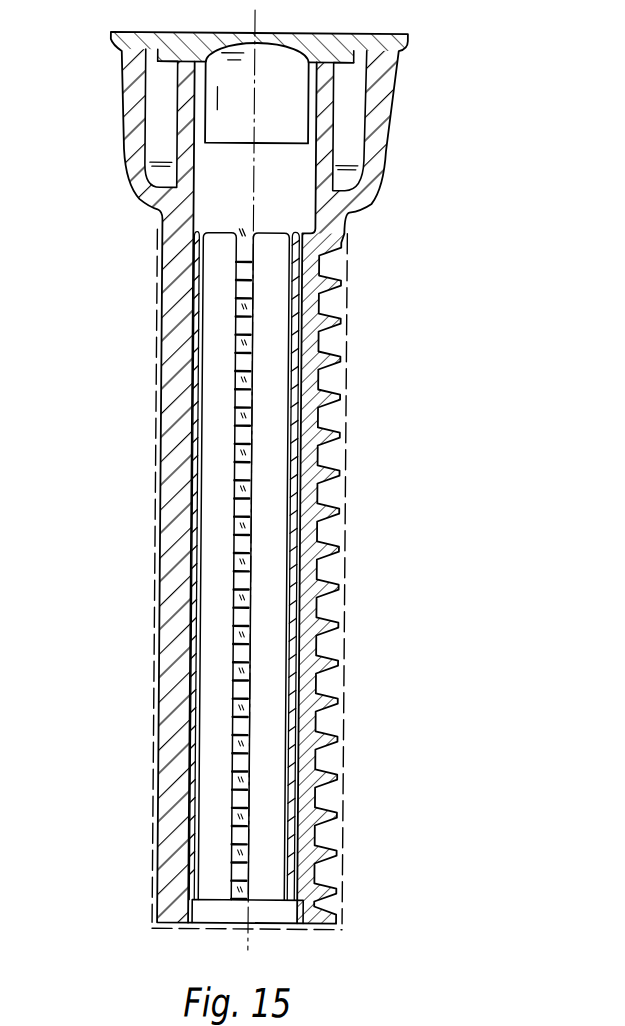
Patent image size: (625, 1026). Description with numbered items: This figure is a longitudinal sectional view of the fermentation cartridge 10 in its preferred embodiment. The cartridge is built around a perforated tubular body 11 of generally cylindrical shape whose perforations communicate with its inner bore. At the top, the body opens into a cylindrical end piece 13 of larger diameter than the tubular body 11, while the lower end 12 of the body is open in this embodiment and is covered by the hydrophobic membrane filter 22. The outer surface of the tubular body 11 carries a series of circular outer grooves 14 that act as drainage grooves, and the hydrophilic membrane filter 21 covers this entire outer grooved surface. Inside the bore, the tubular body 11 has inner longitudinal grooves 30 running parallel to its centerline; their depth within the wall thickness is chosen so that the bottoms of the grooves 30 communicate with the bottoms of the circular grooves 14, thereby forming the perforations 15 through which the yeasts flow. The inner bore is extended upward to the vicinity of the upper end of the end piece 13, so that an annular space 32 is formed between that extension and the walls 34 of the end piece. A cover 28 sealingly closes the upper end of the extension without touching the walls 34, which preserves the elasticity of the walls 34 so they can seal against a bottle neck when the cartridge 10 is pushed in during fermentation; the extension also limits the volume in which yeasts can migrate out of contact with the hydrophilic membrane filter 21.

The cartridge 10 is at (414, 268).
The perforated tubular body 11 is at (95, 214).
The lower end 12 is at (95, 888).
The cylindrical end piece 13 is at (95, 35).
The outer grooves 14 is at (342, 524).
The perforations 15 is at (252, 456).
The hydrophilic membrane filter 21 is at (157, 757).
The hydrophobic membrane filter 22 is at (338, 929).
The cover 28 is at (323, 43).
The inner longitudinal grooves 30 is at (245, 234).
The annular space 32 is at (353, 138).
The walls 34 is at (388, 85).